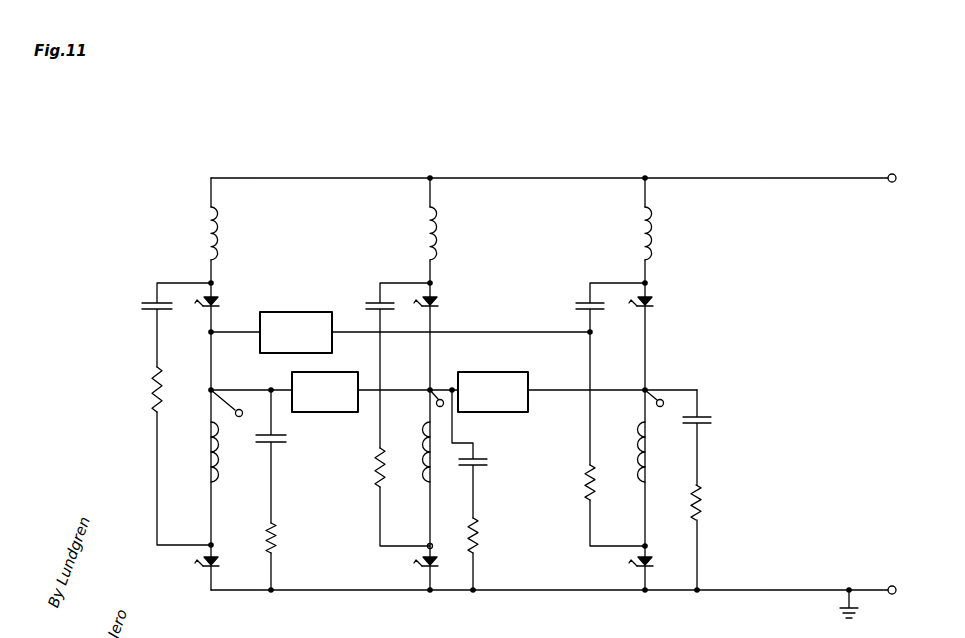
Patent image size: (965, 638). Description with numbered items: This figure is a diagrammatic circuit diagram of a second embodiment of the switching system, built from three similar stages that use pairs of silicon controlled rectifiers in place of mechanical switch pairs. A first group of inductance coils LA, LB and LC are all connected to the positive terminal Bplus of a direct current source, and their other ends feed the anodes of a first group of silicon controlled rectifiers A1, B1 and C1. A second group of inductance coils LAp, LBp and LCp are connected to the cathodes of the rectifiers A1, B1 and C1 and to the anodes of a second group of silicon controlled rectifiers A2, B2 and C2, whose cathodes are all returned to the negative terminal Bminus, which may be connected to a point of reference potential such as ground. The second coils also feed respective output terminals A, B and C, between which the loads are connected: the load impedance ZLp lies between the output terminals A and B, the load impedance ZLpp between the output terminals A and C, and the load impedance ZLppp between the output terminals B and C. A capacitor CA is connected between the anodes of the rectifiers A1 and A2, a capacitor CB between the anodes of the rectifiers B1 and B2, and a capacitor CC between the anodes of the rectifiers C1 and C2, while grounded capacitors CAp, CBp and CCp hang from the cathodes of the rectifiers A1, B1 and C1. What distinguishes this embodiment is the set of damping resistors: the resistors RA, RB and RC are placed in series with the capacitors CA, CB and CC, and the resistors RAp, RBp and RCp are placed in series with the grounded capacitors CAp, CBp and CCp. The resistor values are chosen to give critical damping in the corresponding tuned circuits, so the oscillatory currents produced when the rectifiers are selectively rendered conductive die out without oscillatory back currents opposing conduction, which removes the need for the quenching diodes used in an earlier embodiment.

The positive terminal Bplus is at (579, 180).
The negative terminal Bminus is at (579, 600).
The inductance coil LA is at (207, 233).
The inductance coil LB is at (424, 236).
The inductance coil LC is at (640, 238).
The silicon controlled rectifier A1 is at (219, 306).
The silicon controlled rectifier B1 is at (438, 306).
The silicon controlled rectifier C1 is at (653, 306).
The silicon controlled rectifier A2 is at (203, 566).
The silicon controlled rectifier B2 is at (422, 566).
The silicon controlled rectifier C2 is at (637, 566).
The capacitor CA is at (140, 312).
The capacitor CB is at (374, 304).
The capacitor CC is at (596, 310).
The resistor RA is at (150, 386).
The resistor RB is at (375, 466).
The resistor RC is at (596, 486).
The inductance coil LAp is at (205, 466).
The inductance coil LBp is at (422, 450).
The inductance coil LCp is at (637, 455).
The grounded capacitor CAp is at (287, 441).
The grounded capacitor CBp is at (486, 457).
The grounded capacitor CCp is at (712, 422).
The resistor RAp is at (278, 537).
The resistor RBp is at (480, 531).
The resistor RCp is at (703, 500).
The load impedance ZLp is at (334, 392).
The load impedance ZLpp is at (402, 332).
The load impedance ZLppp is at (577, 392).
The output terminal A is at (232, 409).
The output terminal B is at (438, 407).
The output terminal C is at (664, 400).